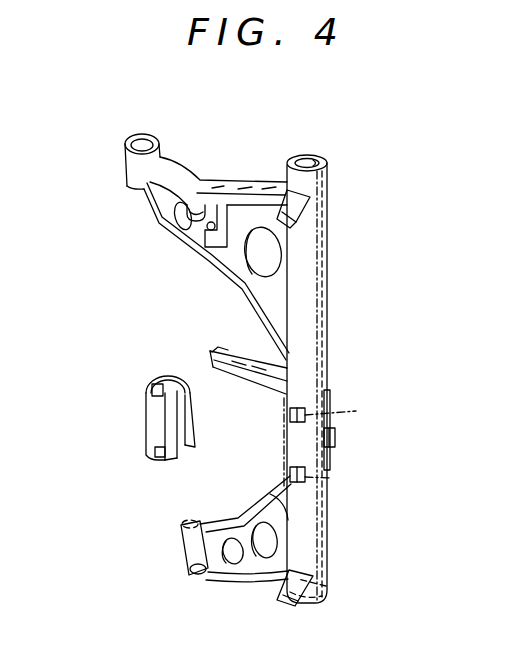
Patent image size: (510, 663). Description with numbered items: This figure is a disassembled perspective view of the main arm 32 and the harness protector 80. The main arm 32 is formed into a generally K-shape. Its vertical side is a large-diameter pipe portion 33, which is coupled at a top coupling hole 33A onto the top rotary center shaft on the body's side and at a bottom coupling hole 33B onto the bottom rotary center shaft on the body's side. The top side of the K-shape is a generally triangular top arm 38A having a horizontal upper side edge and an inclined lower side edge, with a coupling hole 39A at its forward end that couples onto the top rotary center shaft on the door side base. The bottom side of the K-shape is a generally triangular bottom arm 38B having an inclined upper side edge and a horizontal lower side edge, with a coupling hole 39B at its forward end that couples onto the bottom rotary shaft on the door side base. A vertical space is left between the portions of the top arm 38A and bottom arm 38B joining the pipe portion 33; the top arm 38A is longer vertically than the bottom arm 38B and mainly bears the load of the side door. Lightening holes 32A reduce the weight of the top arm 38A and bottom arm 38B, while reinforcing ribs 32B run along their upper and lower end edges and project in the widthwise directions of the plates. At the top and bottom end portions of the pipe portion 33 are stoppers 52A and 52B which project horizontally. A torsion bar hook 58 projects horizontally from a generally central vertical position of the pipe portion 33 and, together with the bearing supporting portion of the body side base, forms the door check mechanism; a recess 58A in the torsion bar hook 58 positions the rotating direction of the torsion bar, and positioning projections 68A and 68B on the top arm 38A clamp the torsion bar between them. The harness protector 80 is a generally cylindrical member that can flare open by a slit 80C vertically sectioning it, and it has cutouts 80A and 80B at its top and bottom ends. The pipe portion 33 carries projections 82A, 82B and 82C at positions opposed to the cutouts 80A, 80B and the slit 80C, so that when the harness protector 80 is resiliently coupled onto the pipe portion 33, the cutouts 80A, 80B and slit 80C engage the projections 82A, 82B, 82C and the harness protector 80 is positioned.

The main arm 32 is at (124, 318).
The lightening holes 32A is at (272, 254).
The reinforcing ribs 32B is at (128, 186).
The pipe portion 33 is at (300, 330).
The top coupling hole 33A is at (320, 162).
The bottom coupling hole 33B is at (328, 582).
The top arm 38A is at (219, 270).
The bottom arm 38B is at (224, 496).
The coupling hole 39A is at (142, 133).
The coupling hole 39B is at (180, 522).
The stopper 52A is at (293, 210).
The stopper 52B is at (290, 603).
The torsion bar hook 58 is at (234, 372).
The recess 58A is at (224, 352).
The positioning projection 68A is at (194, 203).
The positioning projection 68B is at (228, 215).
The harness protector 80 is at (153, 430).
The cutout 80A is at (150, 387).
The cutout 80B is at (160, 456).
The slit 80C is at (273, 428).
The projection 82A is at (305, 398).
The projection 82B is at (302, 486).
The projection 82C is at (336, 438).